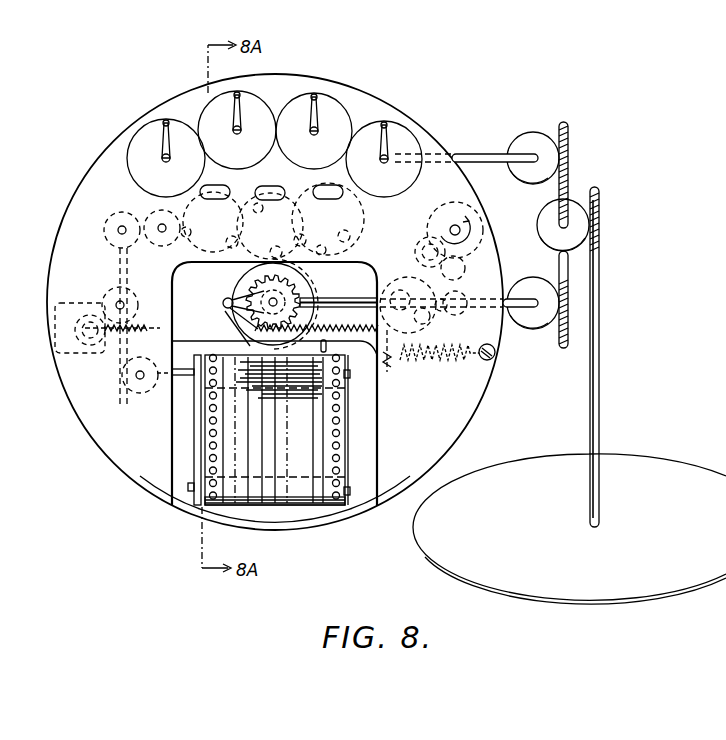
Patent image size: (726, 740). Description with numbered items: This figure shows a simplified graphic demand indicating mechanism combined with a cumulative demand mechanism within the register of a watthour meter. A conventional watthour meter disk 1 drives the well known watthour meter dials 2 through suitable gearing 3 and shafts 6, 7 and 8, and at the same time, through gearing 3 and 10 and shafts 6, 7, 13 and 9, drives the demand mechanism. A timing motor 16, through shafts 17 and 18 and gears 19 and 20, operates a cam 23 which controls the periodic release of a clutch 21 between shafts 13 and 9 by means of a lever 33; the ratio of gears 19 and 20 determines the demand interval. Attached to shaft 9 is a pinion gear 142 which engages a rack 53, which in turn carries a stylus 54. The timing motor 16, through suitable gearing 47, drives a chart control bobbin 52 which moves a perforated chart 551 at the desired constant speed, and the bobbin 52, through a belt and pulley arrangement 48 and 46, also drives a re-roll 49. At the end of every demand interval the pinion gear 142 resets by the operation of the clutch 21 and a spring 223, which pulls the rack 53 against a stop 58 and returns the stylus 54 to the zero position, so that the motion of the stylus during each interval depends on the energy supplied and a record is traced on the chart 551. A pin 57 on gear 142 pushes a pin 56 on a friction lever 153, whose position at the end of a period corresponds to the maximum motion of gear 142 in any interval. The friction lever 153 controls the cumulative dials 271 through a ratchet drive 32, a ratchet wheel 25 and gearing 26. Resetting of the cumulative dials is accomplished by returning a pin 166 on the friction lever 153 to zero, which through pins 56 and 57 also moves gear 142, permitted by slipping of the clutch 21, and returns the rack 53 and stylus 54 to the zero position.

The watthour meter disk 1 is at (678, 462).
The watthour meter dials 2 is at (301, 94).
The gearing 3 is at (609, 230).
The shaft 6 is at (600, 369).
The shaft 7 is at (556, 200).
The shaft 8 is at (579, 167).
The shaft 9 is at (358, 299).
The gearing 10 is at (558, 342).
The shaft 13 is at (520, 298).
The timing motor 16 is at (57, 350).
The shaft 17 is at (140, 324).
The shaft 18 is at (120, 268).
The gear 19 is at (118, 326).
The gear 20 is at (143, 215).
The clutch 21 is at (432, 322).
The cam 23 is at (476, 206).
The ratchet wheel 25 is at (244, 326).
The gearing 26 is at (298, 263).
The ratchet drive 32 is at (226, 307).
The lever 33 is at (459, 281).
The belt and pulley arrangement 46 is at (200, 440).
The gearing 47 is at (114, 380).
The belt and pulley arrangement 48 is at (197, 366).
The re-roll 49 is at (194, 485).
The chart control bobbin 52 is at (346, 378).
The rack 53 is at (351, 331).
The stylus 54 is at (329, 347).
The pin 56 is at (253, 283).
The pin 57 is at (254, 331).
The stop 58 is at (393, 367).
The pinion gear 142 is at (300, 296).
The friction lever 153 is at (236, 299).
The pin 166 is at (225, 300).
The spring 223 is at (447, 366).
The cumulative dials 271 is at (287, 186).
The perforated chart 551 is at (343, 429).